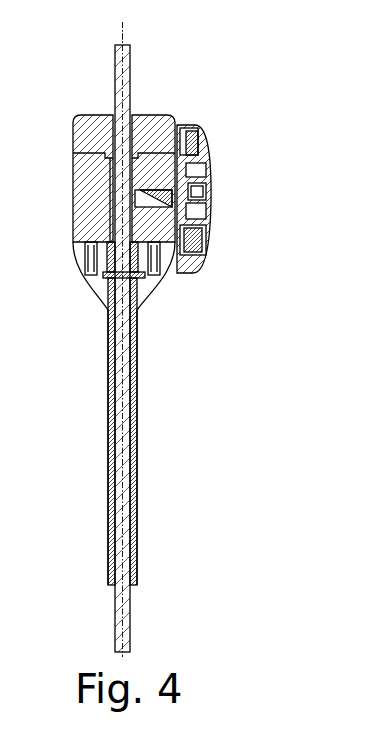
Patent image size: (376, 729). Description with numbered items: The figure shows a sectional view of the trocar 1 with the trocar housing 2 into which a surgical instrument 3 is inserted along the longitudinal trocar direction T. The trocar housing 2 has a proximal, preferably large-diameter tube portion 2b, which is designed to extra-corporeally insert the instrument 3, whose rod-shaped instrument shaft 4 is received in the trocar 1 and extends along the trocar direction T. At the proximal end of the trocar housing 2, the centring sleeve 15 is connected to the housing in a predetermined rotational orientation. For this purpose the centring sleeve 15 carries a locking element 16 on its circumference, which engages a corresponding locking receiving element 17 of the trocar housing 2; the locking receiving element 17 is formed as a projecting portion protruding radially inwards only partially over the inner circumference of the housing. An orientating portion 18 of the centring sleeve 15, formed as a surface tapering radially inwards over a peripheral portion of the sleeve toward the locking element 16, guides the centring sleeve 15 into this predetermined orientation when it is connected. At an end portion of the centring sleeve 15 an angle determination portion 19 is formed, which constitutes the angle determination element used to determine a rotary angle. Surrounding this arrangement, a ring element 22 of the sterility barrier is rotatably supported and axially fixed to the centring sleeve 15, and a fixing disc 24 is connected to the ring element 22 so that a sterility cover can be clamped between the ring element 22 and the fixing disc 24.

The trocar 1 is at (272, 44).
The trocar housing 2 is at (137, 285).
The proximal tube portion 2b is at (165, 125).
The surgical instrument 3 is at (107, 65).
The instrument shaft 4 is at (122, 78).
The trocar direction T is at (122, 22).
The centring sleeve 15 is at (200, 172).
The locking element 16 is at (200, 186).
The locking receiving element 17 is at (203, 241).
The orientating portion 18 is at (132, 196).
The angle determination portion 19 is at (203, 210).
The ring element 22 is at (200, 262).
The fixing disc 24 is at (190, 141).